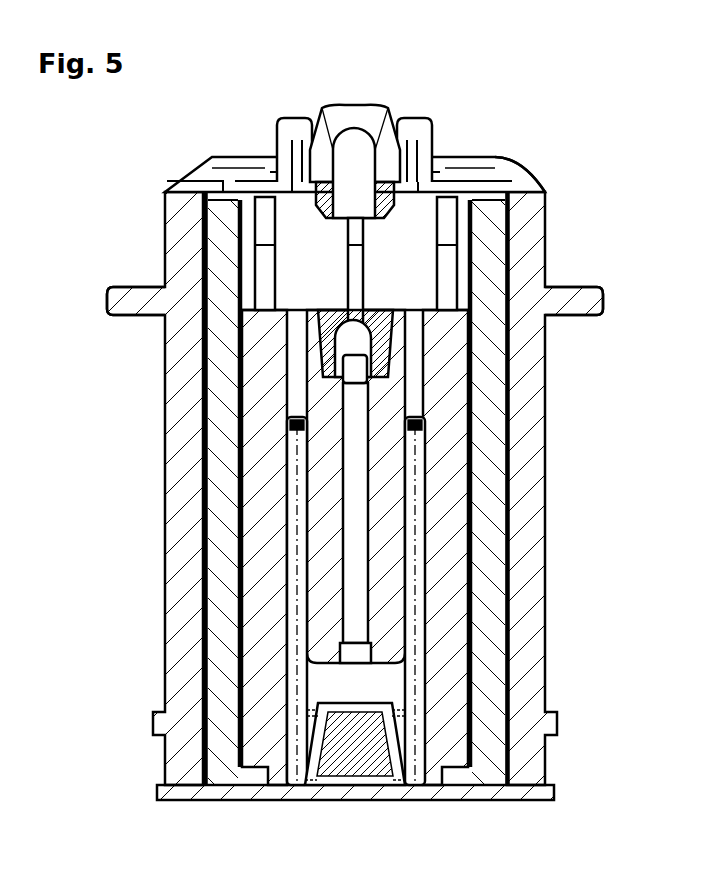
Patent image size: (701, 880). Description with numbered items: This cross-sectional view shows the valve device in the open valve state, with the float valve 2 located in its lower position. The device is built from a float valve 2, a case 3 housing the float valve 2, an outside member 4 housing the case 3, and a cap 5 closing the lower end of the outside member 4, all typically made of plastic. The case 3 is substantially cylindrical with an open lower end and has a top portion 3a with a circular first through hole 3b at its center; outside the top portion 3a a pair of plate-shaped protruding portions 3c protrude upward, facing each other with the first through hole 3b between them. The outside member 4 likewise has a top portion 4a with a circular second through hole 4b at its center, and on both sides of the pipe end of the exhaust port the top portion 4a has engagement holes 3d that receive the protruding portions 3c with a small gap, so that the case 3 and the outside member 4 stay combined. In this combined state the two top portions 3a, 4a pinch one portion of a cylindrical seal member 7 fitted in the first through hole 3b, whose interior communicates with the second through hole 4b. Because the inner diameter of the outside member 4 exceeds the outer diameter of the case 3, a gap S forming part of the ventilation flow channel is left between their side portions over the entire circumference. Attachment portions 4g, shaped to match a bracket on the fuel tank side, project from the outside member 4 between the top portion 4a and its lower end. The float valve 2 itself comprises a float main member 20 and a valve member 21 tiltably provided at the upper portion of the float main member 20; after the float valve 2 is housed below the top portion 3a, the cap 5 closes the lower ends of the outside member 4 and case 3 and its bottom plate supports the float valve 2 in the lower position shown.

The float valve 2 is at (444, 547).
The float main member 20 is at (455, 571).
The case 3 is at (207, 576).
The top portion 3a is at (436, 192).
The first through hole 3b is at (396, 204).
The plate-shaped protruding portion 3c is at (299, 120).
The engagement hole 3d is at (272, 174).
The outside member 4 is at (182, 457).
The top portion 4a is at (516, 165).
The second through hole 4b is at (344, 186).
The attachment portion 4g is at (113, 301).
The cap 5 is at (455, 801).
The cylindrical seal member 7 is at (356, 206).
The valve member 21 is at (332, 310).
The gap S is at (516, 481).